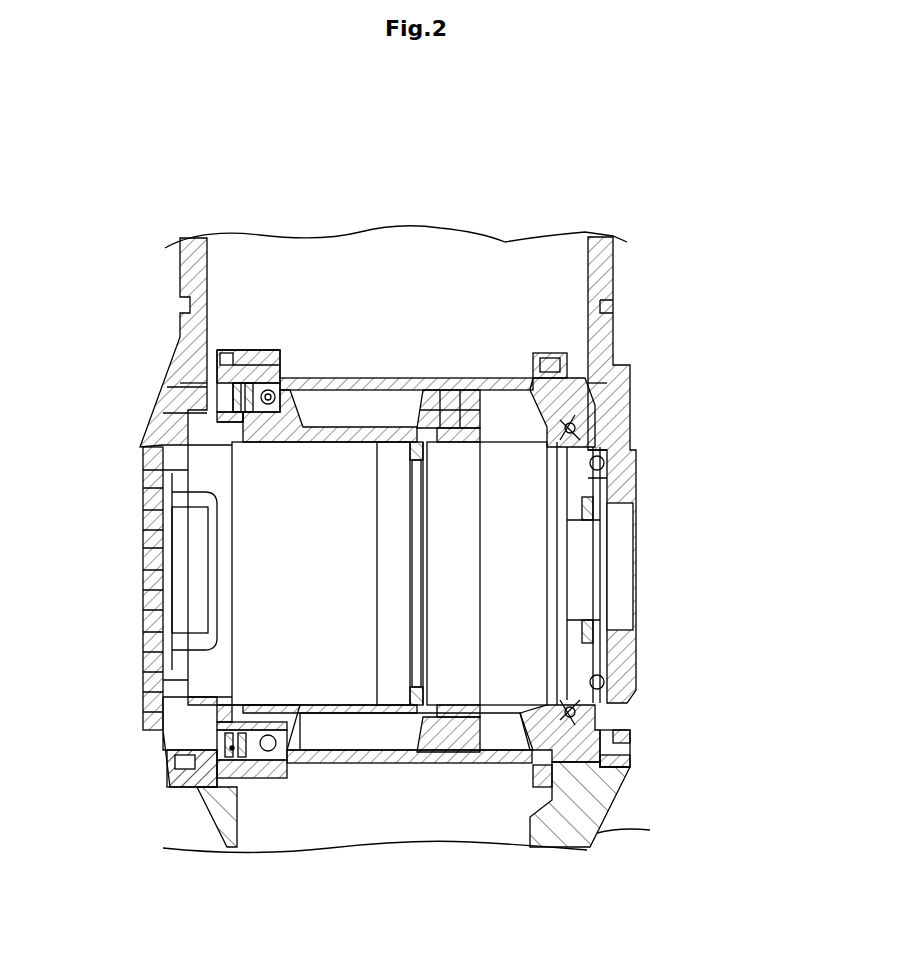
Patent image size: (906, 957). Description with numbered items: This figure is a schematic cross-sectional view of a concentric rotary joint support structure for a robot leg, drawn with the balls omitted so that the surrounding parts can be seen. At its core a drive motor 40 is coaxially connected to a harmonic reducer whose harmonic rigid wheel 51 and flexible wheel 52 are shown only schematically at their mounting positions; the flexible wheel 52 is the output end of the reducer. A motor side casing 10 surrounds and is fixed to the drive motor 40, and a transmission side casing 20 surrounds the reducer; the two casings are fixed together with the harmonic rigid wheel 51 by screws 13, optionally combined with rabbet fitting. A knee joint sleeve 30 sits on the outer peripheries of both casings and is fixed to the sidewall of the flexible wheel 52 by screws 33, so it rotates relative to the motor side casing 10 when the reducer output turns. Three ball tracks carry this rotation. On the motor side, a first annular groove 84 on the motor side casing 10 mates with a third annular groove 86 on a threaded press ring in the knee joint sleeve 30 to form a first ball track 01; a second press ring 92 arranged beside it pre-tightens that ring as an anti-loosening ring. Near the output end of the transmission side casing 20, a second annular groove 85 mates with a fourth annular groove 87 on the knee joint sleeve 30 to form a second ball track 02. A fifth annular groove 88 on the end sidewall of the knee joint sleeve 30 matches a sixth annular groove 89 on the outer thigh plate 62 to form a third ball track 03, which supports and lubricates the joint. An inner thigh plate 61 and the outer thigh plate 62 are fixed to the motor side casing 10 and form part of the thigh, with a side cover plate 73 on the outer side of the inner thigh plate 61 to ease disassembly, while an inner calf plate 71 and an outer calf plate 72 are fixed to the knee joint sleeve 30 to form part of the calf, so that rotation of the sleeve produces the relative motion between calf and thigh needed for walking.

The motor side casing 10 is at (363, 708).
The screw 13 is at (427, 727).
The transmission side casing 20 is at (517, 712).
The knee joint sleeve 30 is at (340, 383).
The screw 33 is at (587, 508).
The drive motor 40 is at (283, 603).
The harmonic rigid wheel 51 is at (447, 438).
The flexible wheel 52 is at (522, 545).
The inner thigh plate 61 is at (187, 417).
The outer thigh plate 62 is at (610, 382).
The inner calf plate 71 is at (223, 793).
The outer calf plate 72 is at (572, 778).
The side cover plate 73 is at (153, 603).
The first annular groove 84 is at (277, 383).
The second annular groove 85 is at (565, 712).
The third annular groove 86 is at (262, 397).
The fourth annular groove 87 is at (622, 752).
The fifth annular groove 88 is at (603, 470).
The sixth annular groove 89 is at (597, 462).
The second press ring 92 is at (173, 785).
The first ball track 01 is at (268, 400).
The second ball track 02 is at (568, 432).
The third ball track 03 is at (593, 680).